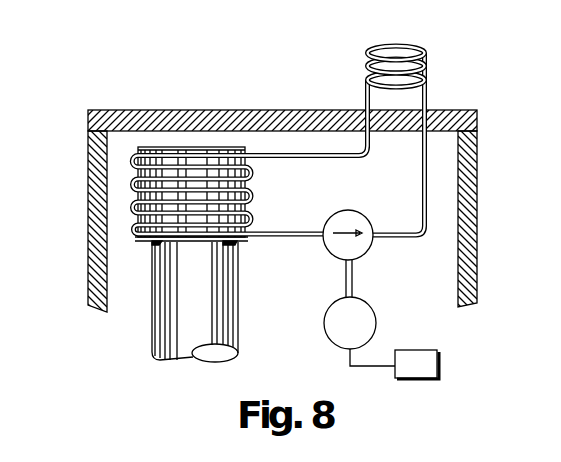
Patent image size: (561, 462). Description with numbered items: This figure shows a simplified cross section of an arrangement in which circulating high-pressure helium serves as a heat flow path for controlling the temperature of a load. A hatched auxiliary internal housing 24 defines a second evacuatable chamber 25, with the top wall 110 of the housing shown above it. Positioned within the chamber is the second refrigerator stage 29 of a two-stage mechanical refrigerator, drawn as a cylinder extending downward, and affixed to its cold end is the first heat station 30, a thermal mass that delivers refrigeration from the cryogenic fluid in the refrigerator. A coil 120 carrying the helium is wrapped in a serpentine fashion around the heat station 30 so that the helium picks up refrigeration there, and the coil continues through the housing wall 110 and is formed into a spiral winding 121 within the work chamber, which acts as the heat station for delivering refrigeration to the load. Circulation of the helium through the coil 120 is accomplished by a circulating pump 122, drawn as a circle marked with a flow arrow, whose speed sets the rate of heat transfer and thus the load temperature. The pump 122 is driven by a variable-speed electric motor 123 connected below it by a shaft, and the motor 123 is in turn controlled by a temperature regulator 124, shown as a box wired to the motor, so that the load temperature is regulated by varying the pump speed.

The auxiliary internal housing 24 is at (98, 178).
The second evacuatable chamber 25 is at (120, 215).
The second refrigerator stage 29 is at (212, 323).
The first heat station 30 is at (246, 207).
The housing top wall 110 is at (172, 110).
The coil 120 is at (413, 238).
The spiral winding 121 is at (423, 50).
The circulating pump 122 is at (327, 255).
The variable-speed electric motor 123 is at (330, 323).
The temperature regulator 124 is at (423, 361).